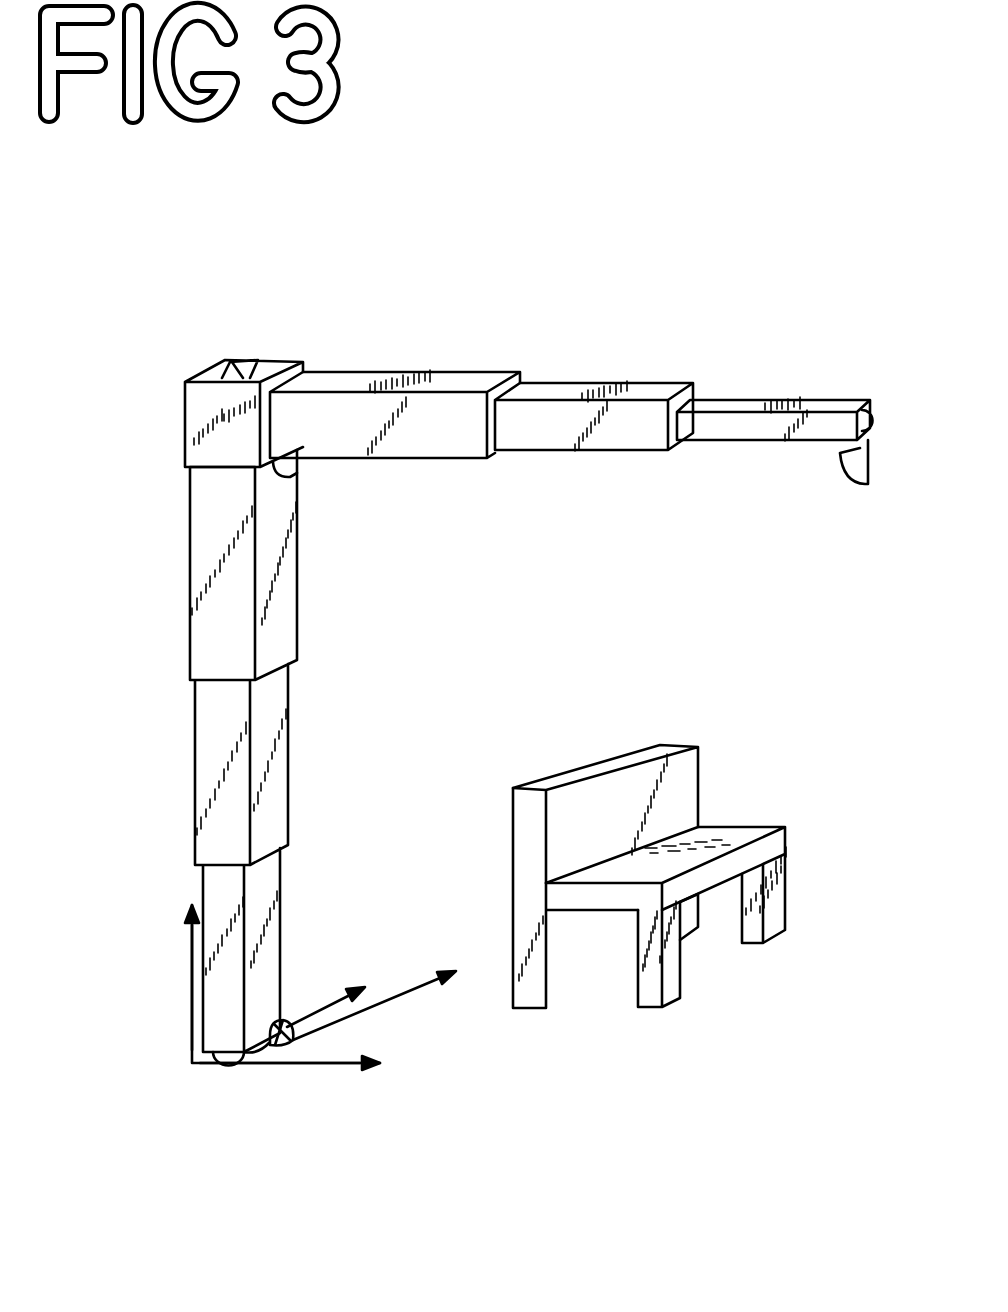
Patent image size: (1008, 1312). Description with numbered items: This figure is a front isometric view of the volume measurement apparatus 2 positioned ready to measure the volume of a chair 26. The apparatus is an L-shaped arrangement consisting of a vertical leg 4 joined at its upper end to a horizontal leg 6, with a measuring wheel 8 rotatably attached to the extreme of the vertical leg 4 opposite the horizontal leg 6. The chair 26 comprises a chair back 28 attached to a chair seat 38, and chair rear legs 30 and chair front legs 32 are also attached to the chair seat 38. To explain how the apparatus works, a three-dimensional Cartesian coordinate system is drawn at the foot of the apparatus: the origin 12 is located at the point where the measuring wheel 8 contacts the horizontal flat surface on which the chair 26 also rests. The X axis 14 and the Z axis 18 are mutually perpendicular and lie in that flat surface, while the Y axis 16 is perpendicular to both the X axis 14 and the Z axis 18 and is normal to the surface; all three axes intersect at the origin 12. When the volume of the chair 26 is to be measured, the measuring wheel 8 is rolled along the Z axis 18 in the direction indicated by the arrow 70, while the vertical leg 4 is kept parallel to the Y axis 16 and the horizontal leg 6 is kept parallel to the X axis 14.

The volume measurement apparatus 2 is at (735, 236).
The vertical leg 4 is at (188, 528).
The horizontal leg 6 is at (458, 372).
The measuring wheel 8 is at (230, 1055).
The origin 12 is at (192, 1068).
The X axis 14 is at (325, 1066).
The Y axis 16 is at (188, 990).
The Z axis 18 is at (287, 1008).
The arrow 70 is at (392, 993).
The chair 26 is at (812, 744).
The chair back 28 is at (600, 766).
The chair rear legs 30 is at (555, 982).
The chair front legs 32 is at (777, 915).
The chair seat 38 is at (712, 838).